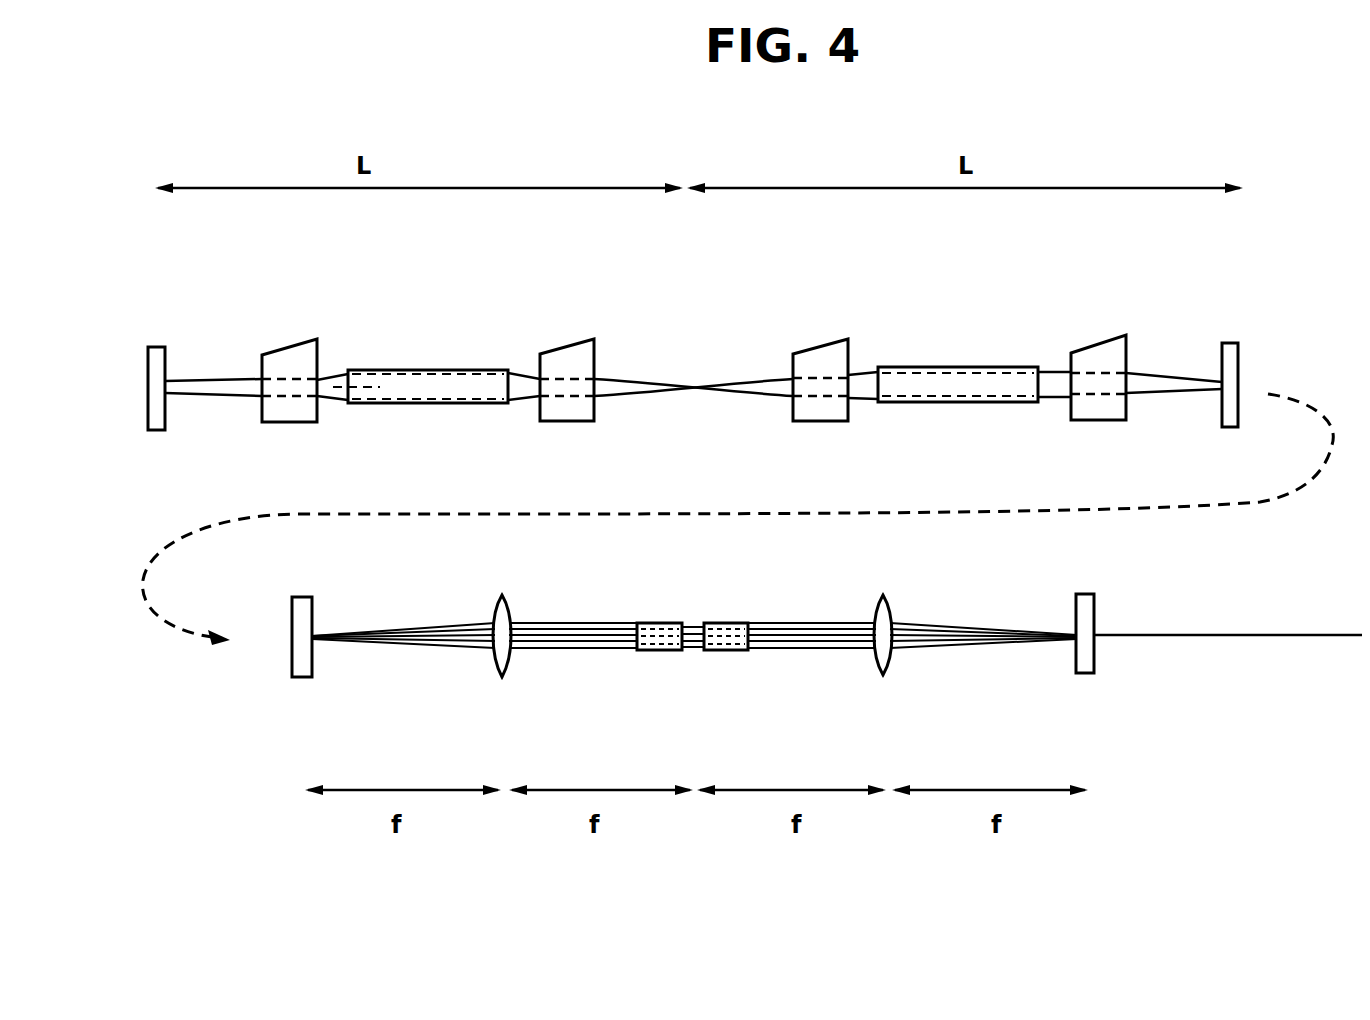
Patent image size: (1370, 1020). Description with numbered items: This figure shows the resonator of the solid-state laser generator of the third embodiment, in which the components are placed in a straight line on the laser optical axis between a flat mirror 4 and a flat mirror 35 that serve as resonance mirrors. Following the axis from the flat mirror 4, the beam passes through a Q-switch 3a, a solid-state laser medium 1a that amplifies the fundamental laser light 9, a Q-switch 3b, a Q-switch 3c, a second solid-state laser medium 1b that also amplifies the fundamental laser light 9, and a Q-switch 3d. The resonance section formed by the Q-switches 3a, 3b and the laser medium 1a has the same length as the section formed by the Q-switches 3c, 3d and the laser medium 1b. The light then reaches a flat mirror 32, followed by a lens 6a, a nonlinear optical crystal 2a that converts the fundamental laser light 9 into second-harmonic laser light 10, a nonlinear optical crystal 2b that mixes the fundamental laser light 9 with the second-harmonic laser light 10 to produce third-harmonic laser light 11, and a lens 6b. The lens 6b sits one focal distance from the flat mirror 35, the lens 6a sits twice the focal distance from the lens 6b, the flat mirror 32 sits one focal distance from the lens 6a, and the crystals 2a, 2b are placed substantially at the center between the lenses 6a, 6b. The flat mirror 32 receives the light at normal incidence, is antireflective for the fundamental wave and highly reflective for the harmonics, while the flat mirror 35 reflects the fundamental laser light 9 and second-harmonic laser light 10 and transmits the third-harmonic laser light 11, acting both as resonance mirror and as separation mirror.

The flat mirror 4 is at (160, 432).
The Q-switch 3a is at (288, 344).
The Q-switch 3b is at (572, 342).
The Q-switch 3c is at (826, 341).
The Q-switch 3d is at (1103, 340).
The solid-state laser medium 1a is at (427, 404).
The solid-state laser medium 1b is at (967, 403).
The fundamental laser light 9 is at (697, 392).
The flat mirror 32 is at (1226, 342).
The lens 6a is at (502, 678).
The lens 6b is at (882, 676).
The nonlinear optical crystal 2a is at (662, 652).
The nonlinear optical crystal 2b is at (728, 652).
The second-harmonic laser light 10 is at (925, 648).
The flat mirror 35 is at (1082, 674).
The third-harmonic laser light 11 is at (1316, 633).